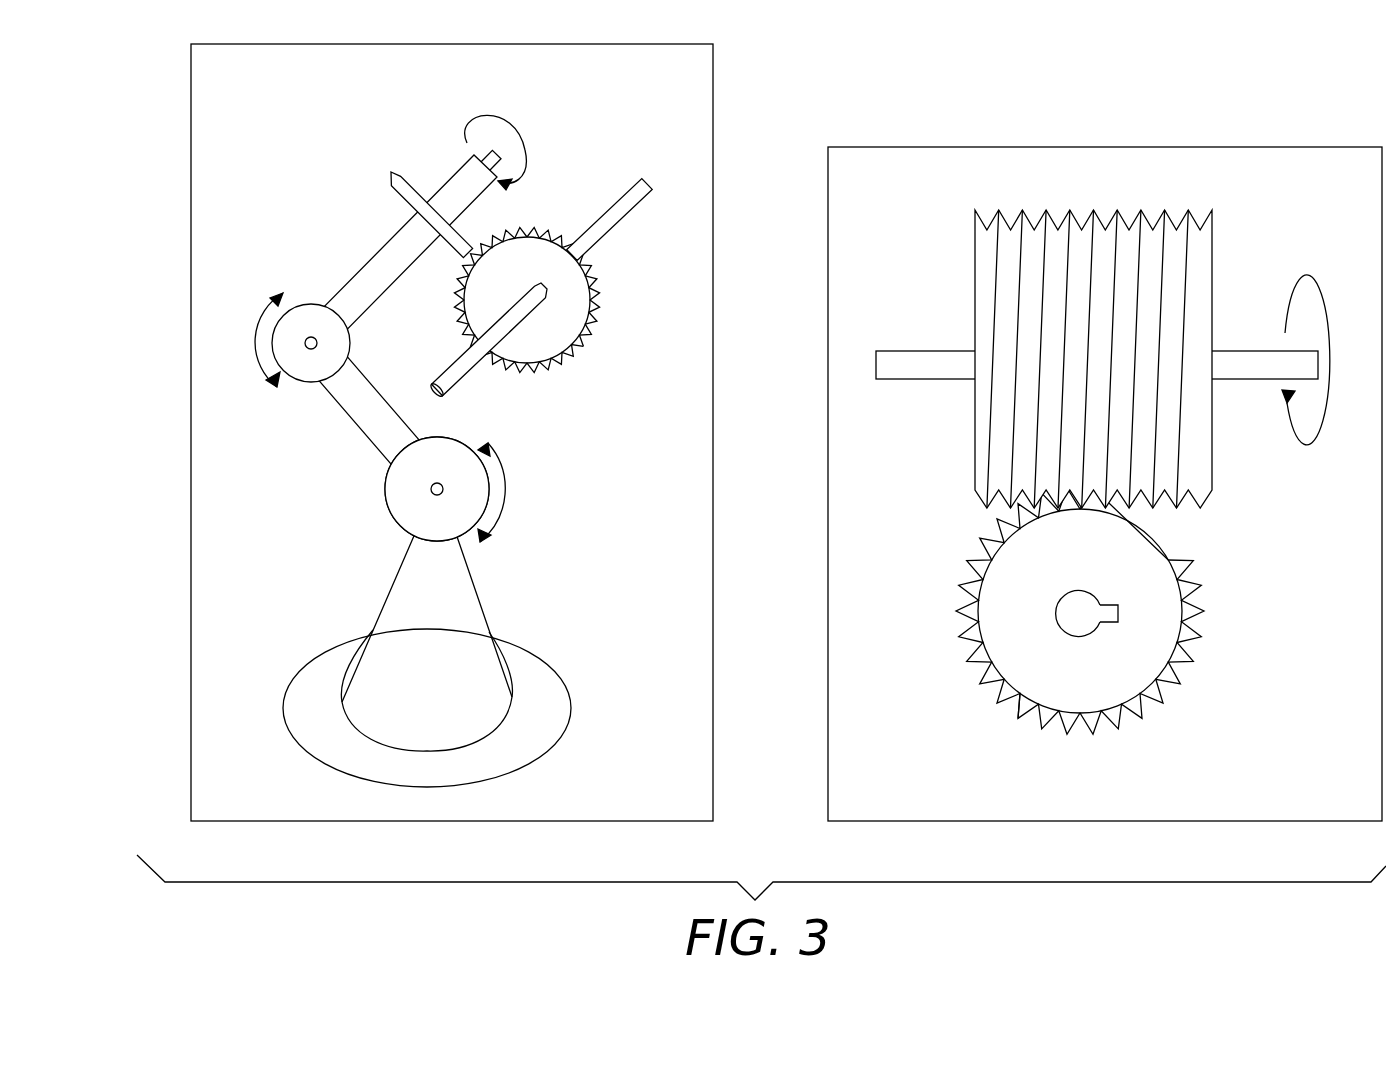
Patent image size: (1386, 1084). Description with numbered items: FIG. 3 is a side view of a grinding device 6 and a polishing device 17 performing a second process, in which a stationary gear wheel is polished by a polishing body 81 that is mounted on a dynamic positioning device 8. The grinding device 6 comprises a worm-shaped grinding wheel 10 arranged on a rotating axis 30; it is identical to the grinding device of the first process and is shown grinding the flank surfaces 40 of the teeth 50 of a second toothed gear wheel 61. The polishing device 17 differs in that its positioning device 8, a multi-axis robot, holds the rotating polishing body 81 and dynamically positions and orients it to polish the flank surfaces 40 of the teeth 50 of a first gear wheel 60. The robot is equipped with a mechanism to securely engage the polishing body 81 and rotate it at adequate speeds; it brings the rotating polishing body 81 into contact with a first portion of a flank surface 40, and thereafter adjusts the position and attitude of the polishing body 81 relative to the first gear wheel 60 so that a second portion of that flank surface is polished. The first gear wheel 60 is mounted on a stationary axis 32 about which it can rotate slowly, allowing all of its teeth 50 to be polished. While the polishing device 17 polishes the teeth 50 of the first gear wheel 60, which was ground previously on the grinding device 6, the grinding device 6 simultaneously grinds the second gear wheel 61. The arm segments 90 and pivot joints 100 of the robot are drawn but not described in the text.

The grinding device 6 is at (943, 147).
The dynamic positioning device 8 is at (458, 618).
The worm-shaped grinding wheel 10 is at (973, 257).
The polishing device 17 is at (715, 97).
The rotating axis 30 is at (1255, 352).
The stationary axis 32 is at (603, 207).
The flank surfaces 40 is at (601, 301).
The teeth 50 is at (575, 355).
The first gear wheel 60 is at (578, 333).
The second toothed gear wheel 61 is at (1097, 681).
The polishing body 81 is at (413, 197).
The arm 90 is at (353, 287).
The pivot joint 100 is at (310, 350).